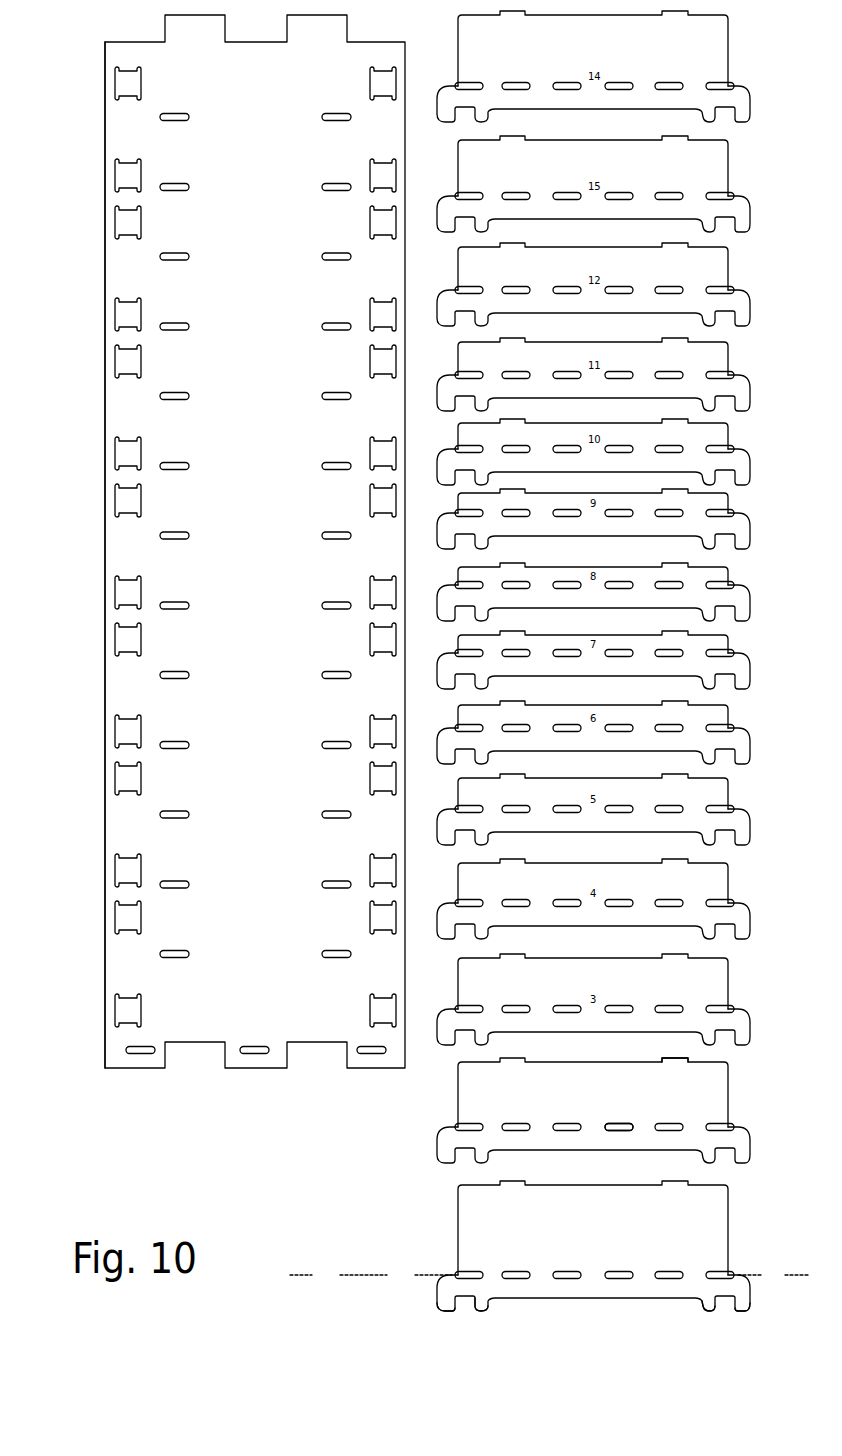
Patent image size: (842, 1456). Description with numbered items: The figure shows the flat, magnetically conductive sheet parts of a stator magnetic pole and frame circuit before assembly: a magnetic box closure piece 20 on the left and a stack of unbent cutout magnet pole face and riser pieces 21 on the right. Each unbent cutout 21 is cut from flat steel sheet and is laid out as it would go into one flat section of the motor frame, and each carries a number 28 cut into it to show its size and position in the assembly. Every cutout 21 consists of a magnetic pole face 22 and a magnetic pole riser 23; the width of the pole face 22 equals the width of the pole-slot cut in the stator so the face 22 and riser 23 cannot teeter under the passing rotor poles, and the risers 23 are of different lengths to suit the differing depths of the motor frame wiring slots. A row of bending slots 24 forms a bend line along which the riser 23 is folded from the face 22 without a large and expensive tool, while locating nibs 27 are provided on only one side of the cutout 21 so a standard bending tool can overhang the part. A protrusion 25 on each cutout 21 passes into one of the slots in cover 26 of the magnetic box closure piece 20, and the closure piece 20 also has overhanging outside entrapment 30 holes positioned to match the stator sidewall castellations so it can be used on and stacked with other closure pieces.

The magnetic box closure piece 20 is at (212, 541).
The overhanging outside entrapment 30 is at (103, 775).
The slot in cover 26 is at (321, 956).
The protrusion to locate slot in cover 25 is at (691, 1057).
The number cut to show size and position assembly 28 is at (586, 1108).
The bending slots 24 is at (628, 1123).
The unbent cutout magnet pole face and riser 21 is at (549, 1284).
The magnetic pole riser 23 is at (593, 1228).
The magnetic pole face 22 is at (596, 1288).
The locating nib 27 is at (438, 1309).